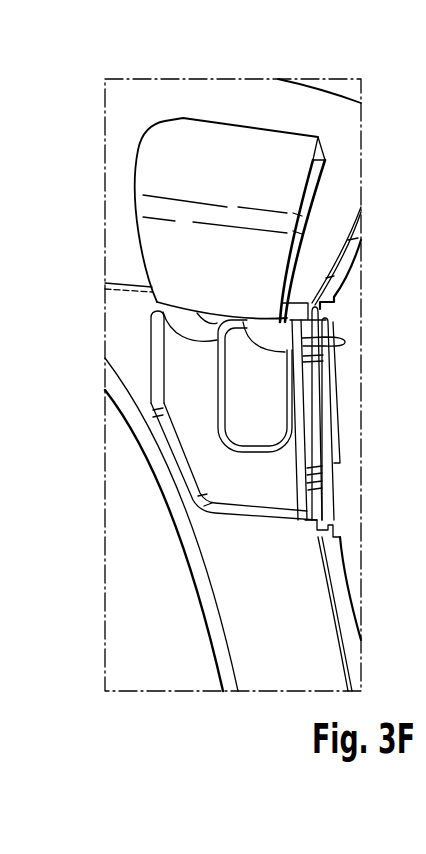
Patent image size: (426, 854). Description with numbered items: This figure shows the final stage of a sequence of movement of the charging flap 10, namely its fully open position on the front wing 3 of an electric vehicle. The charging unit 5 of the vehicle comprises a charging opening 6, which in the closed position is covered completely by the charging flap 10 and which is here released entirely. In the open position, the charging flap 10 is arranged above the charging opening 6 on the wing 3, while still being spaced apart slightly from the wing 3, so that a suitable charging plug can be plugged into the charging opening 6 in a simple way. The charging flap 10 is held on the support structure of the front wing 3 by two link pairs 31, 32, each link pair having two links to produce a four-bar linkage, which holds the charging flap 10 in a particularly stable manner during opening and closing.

The front wing 3 is at (140, 104).
The charging unit 5 is at (252, 540).
The charging opening 6 is at (235, 423).
The charging flap 10 is at (223, 167).
The link pair 31 is at (170, 342).
The link pair 32 is at (350, 358).